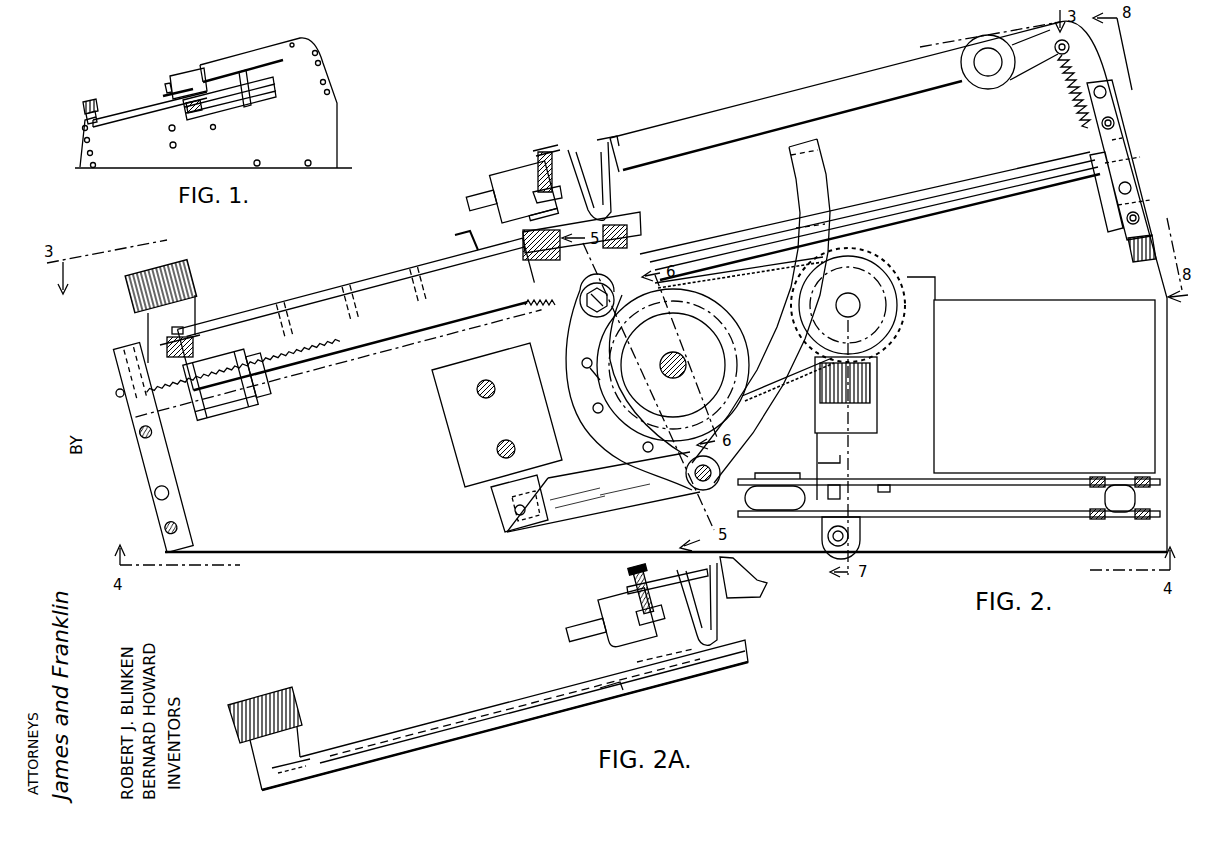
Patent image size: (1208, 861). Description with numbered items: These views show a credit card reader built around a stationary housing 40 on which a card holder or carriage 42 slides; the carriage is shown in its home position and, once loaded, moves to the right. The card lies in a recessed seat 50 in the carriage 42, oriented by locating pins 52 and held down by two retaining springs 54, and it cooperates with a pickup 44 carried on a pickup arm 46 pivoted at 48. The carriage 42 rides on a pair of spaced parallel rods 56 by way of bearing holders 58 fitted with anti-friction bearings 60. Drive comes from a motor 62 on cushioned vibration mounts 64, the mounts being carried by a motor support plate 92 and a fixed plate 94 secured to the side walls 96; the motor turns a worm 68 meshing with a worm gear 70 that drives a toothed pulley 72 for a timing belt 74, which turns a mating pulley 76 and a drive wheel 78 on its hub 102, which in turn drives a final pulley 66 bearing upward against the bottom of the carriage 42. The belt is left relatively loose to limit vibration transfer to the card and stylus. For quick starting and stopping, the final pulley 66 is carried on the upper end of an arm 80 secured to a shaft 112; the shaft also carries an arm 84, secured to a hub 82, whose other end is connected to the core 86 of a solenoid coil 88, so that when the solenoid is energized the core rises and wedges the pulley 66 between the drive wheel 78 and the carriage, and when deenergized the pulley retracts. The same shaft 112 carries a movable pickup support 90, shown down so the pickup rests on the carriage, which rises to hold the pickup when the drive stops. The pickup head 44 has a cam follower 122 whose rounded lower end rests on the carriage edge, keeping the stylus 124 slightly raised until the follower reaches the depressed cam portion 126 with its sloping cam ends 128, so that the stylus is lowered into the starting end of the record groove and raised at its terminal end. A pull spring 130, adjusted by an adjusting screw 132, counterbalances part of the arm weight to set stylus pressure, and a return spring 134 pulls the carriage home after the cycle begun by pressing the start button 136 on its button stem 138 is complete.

In FIG. 1, the stationary housing 40 is at (338, 120).
In FIG. 2, the stationary housing 40 is at (640, 286).
In FIG. 1, the carriage 42 is at (118, 102).
In FIG. 2, the carriage 42 is at (170, 335).
In FIG. 2A, the carriage 42 is at (663, 675).
In FIG. 1, the pickup 44 is at (176, 76).
In FIG. 2, the pickup 44 is at (505, 178).
In FIG. 2A, the pickup 44 is at (620, 608).
In FIG. 1, the pickup arm 46 is at (225, 63).
In FIG. 2, the pickup arm 46 is at (696, 120).
In FIG. 2A, the pickup arm 46 is at (766, 586).
In FIG. 1, the pivot 48 is at (292, 43).
In FIG. 2, the pivot 48 is at (988, 76).
In FIG. 2, the seat 50 is at (345, 295).
In FIG. 2A, the seat 50 is at (375, 735).
In FIG. 2, the locating pins 52 is at (185, 327).
In FIG. 1, the retaining springs 54 is at (162, 92).
In FIG. 2, the retaining springs 54 is at (477, 243).
In FIG. 1, the rods 56 is at (238, 92).
In FIG. 2, the rods 56 is at (754, 241).
In FIG. 2, the bearing holders 58 is at (230, 412).
In FIG. 2, the anti-friction bearings 60 is at (258, 401).
In FIG. 2, the motor 62 is at (1044, 386).
In FIG. 2, the vibration mounts 64 is at (766, 487).
In FIG. 1, the final pulley 66 is at (186, 106).
In FIG. 2, the final pulley 66 is at (565, 318).
In FIG. 2, the worm 68 is at (862, 410).
In FIG. 2, the worm gear 70 is at (897, 260).
In FIG. 2, the pulley 72 is at (898, 296).
In FIG. 2, the timing belt 74 is at (752, 280).
In FIG. 2, the mating pulley 76 is at (745, 332).
In FIG. 2, the drive wheel 78 is at (673, 365).
In FIG. 2, the arm 80 is at (603, 428).
In FIG. 2, the hub 82 is at (692, 500).
In FIG. 2, the arm 84 is at (612, 497).
In FIG. 2, the solenoid core 86 is at (492, 498).
In FIG. 2, the solenoid coil 88 is at (497, 415).
In FIG. 1, the pickup support 90 is at (249, 74).
In FIG. 2, the pickup support 90 is at (812, 166).
In FIG. 2, the motor support plate 92 is at (965, 485).
In FIG. 2, the fixed plate 94 is at (960, 515).
In FIG. 1, the side walls 96 is at (136, 136).
In FIG. 2, the side walls 96 is at (389, 470).
In FIG. 1, the hub shaft 102 is at (216, 128).
In FIG. 2, the hub shaft 102 is at (688, 368).
In FIG. 2, the shaft 112 is at (714, 481).
In FIG. 2, the cam follower 122 is at (598, 206).
In FIG. 2A, the cam follower 122 is at (735, 640).
In FIG. 2A, the stylus 124 is at (664, 658).
In FIG. 2A, the depressed cam portion 126 is at (440, 712).
In FIG. 2A, the sloping cam ends 128 is at (310, 752).
In FIG. 2, the pull spring 130 is at (1082, 117).
In FIG. 2, the adjusting screw 132 is at (1128, 250).
In FIG. 2, the return spring 134 is at (332, 362).
In FIG. 1, the start button 136 is at (84, 101).
In FIG. 2, the start button 136 is at (126, 293).
In FIG. 2A, the start button 136 is at (232, 725).
In FIG. 1, the knob shaft 138 is at (87, 122).
In FIG. 2, the knob shaft 138 is at (146, 330).
In FIG. 2A, the knob shaft 138 is at (262, 765).